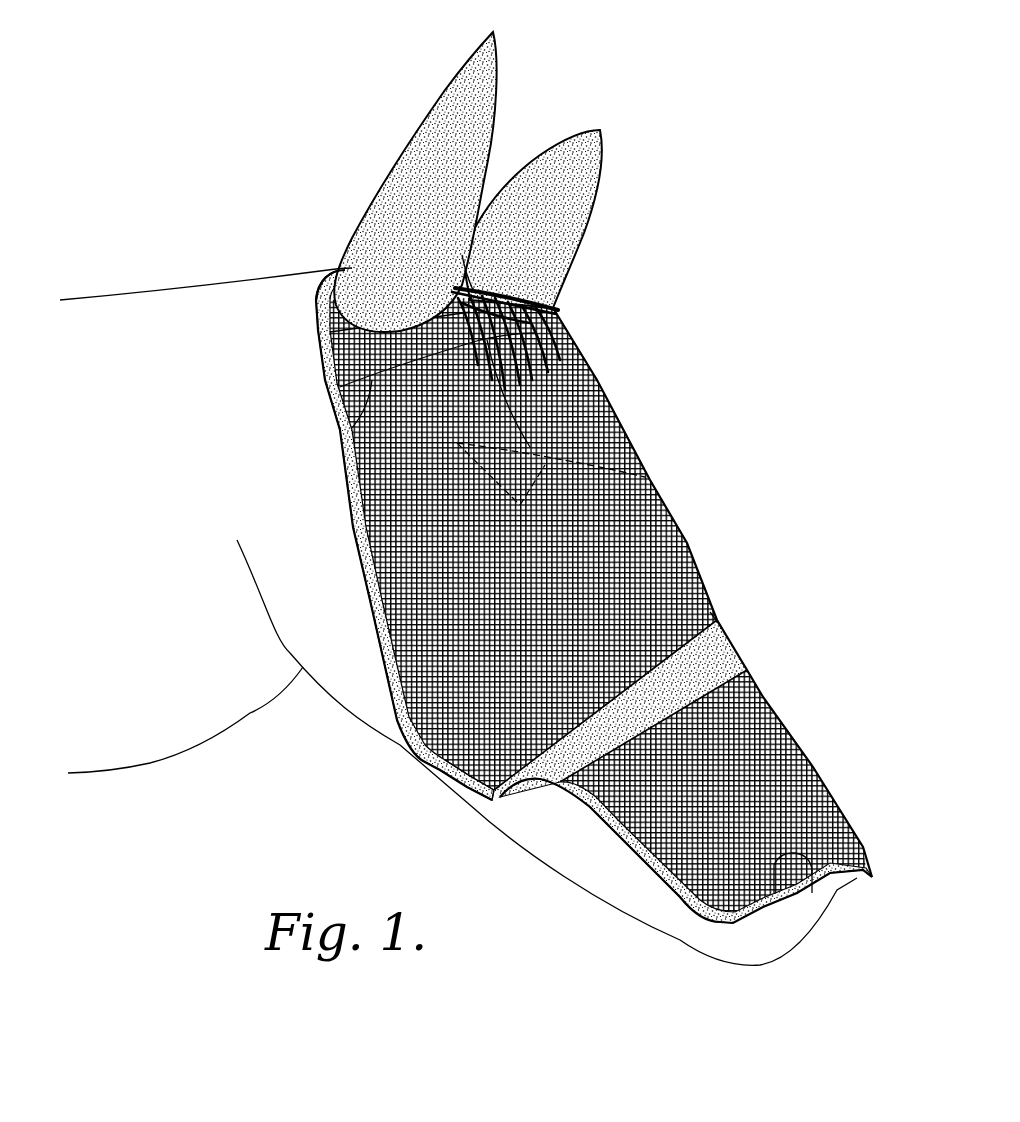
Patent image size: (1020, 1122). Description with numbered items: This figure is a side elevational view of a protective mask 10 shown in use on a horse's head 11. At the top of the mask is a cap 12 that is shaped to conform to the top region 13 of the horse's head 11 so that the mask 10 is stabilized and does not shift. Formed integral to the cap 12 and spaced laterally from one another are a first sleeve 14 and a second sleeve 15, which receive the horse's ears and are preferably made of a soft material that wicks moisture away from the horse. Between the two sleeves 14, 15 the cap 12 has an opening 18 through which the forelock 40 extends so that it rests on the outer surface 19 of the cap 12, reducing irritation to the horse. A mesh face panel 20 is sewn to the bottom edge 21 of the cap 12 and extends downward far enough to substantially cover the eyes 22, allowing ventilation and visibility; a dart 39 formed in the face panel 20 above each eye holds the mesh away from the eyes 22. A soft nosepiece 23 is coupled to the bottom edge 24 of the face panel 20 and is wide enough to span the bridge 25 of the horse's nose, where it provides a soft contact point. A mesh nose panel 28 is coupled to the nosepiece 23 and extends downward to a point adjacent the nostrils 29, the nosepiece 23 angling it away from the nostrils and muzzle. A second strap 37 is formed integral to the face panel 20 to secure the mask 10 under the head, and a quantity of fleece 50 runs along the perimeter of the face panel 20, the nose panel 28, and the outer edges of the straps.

The protective mask 10 is at (645, 418).
The horse's head 11 is at (303, 667).
The cap region 12 is at (330, 272).
The top region of horse's head 13 is at (328, 262).
The first sleeve 14 is at (457, 97).
The second sleeve 15 is at (606, 134).
The opening 18 is at (473, 273).
The outer surface 19 is at (357, 360).
The face panel 20 is at (673, 543).
The bottom edge of cap 21 is at (340, 432).
The eyes 22 is at (651, 473).
The nosepiece 23 is at (742, 634).
The bottom edge of face panel 24 is at (712, 595).
The bridge of horse's nose 25 is at (581, 778).
The nose panel 28 is at (782, 734).
The nostrils 29 is at (797, 893).
The second strap 37 is at (418, 751).
The dart 39 is at (540, 392).
The forelock 40 is at (540, 308).
The quantity of fleece 50 is at (392, 718).